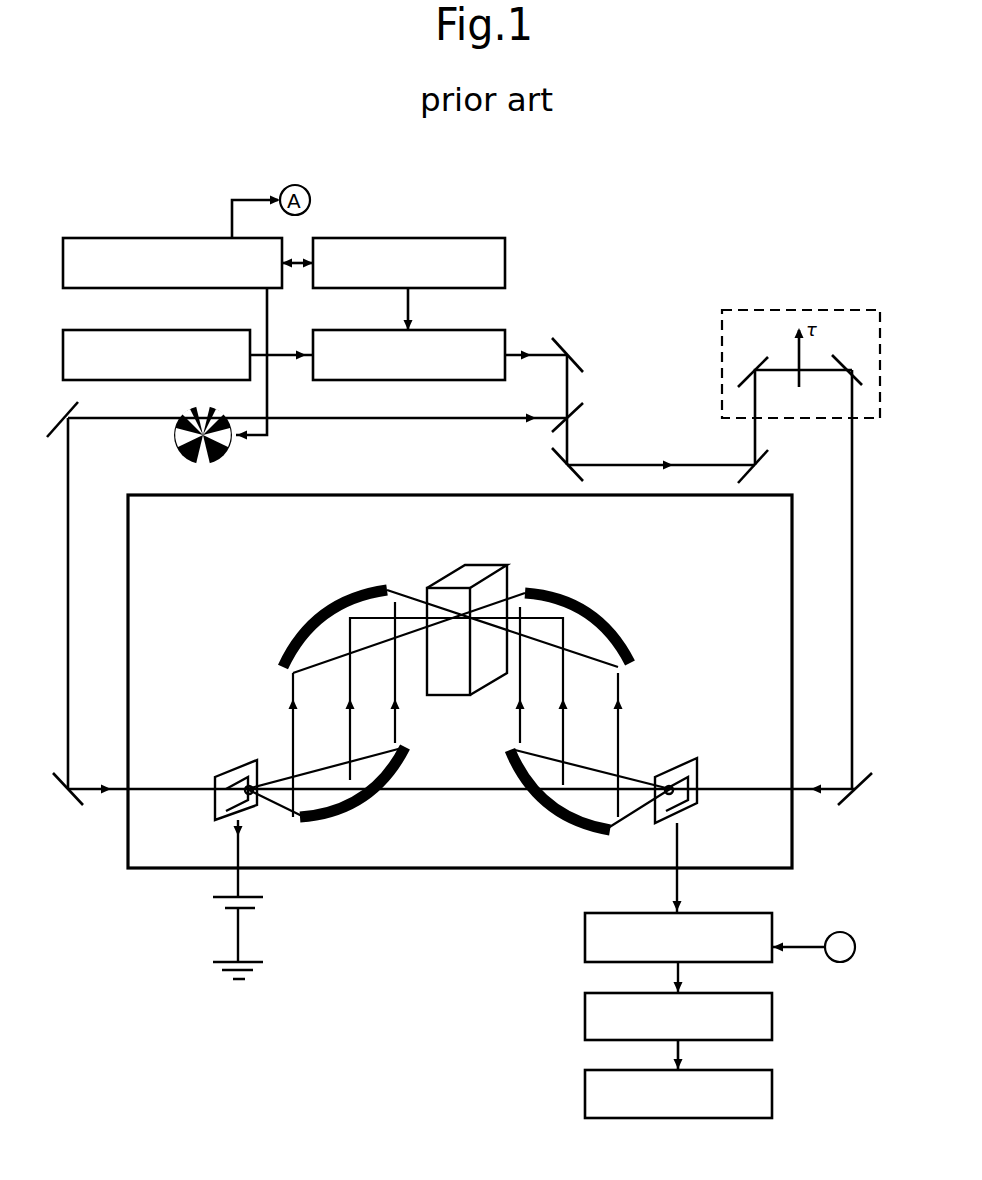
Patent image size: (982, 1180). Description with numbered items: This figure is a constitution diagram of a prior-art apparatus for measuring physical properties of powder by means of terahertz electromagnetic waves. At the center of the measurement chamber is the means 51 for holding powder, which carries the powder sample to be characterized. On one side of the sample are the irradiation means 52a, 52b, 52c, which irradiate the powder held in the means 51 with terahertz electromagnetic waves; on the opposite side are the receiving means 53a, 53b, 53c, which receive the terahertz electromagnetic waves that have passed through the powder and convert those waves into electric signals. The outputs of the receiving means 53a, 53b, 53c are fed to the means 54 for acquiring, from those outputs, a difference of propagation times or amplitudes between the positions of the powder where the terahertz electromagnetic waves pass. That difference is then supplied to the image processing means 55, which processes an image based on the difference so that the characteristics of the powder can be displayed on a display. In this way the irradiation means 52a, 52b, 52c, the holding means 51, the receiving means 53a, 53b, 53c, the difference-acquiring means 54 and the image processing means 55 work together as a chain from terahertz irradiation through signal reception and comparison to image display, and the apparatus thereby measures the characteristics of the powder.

The means for holding powder 51 is at (450, 683).
The irradiation means 52a is at (238, 765).
The irradiation means 52b is at (383, 795).
The irradiation means 52c is at (320, 618).
The receiving means 53a is at (598, 627).
The receiving means 53b is at (543, 795).
The receiving means 53c is at (670, 770).
The means for acquiring a difference of propagation times or amplitudes 54 is at (590, 945).
The image processing means 55 is at (593, 1022).